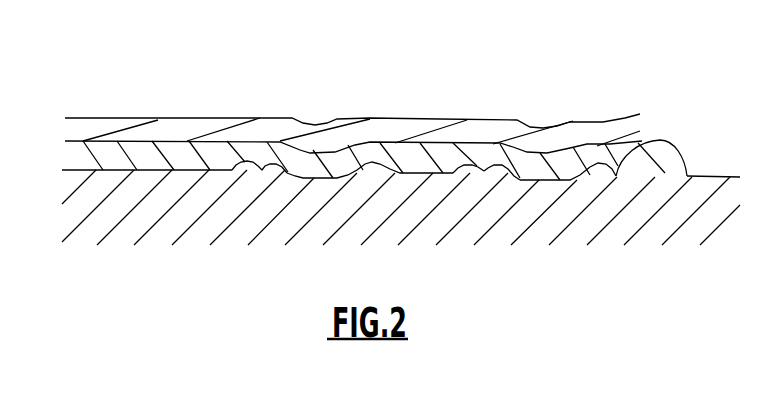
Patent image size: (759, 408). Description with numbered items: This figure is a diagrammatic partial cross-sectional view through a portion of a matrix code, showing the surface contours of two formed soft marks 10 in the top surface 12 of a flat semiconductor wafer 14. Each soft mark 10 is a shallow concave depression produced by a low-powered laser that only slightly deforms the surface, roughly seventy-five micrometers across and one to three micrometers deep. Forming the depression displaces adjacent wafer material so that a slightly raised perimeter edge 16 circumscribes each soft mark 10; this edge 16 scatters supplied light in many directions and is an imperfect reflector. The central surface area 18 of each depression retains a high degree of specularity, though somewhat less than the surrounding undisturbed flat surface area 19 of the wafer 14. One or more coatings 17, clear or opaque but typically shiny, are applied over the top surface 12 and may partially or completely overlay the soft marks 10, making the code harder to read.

The soft mark 10 is at (318, 110).
The top surface 12 is at (716, 177).
The semiconductor wafer 14 is at (668, 75).
The raised perimeter edge 16 is at (478, 165).
The coating 17 is at (145, 157).
The central surface area 18 is at (273, 165).
The undisturbed flat surface area 19 is at (176, 168).